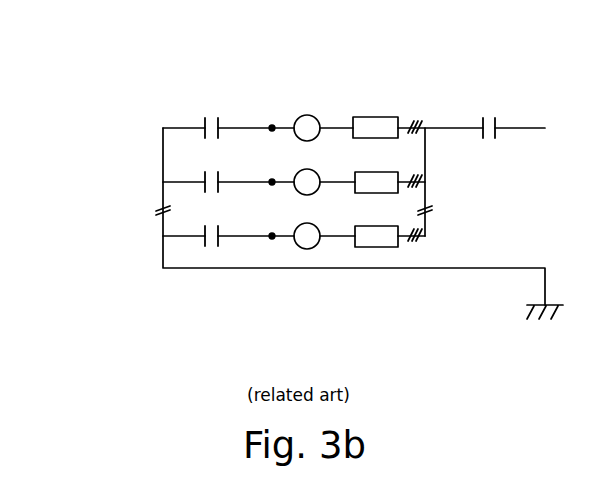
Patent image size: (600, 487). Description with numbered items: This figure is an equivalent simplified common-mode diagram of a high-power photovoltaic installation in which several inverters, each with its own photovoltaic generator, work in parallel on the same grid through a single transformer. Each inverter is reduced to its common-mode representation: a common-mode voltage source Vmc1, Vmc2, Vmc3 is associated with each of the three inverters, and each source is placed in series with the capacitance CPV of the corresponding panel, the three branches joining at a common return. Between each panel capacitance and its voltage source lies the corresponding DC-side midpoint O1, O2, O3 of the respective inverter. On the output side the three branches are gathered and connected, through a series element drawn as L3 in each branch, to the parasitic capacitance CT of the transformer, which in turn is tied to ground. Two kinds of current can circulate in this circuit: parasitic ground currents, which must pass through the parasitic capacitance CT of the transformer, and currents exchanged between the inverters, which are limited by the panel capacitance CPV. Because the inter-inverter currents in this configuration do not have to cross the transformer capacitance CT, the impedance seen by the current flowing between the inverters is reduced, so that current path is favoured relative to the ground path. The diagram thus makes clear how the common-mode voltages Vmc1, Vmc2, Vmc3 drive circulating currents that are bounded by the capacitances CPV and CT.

The parasitic capacitance of the panel CPV is at (211, 211).
The midpoint of the first inverter O1 is at (272, 124).
The midpoint of the second inverter O2 is at (272, 186).
The midpoint of the third inverter O3 is at (272, 240).
The common-mode voltage of the first inverter Vmc1 is at (308, 120).
The common-mode voltage of the second inverter Vmc2 is at (312, 186).
The common-mode voltage of the third inverter Vmc3 is at (307, 242).
The inductance portion L3 is at (392, 232).
The parasitic capacitance of the transformer CT is at (489, 121).